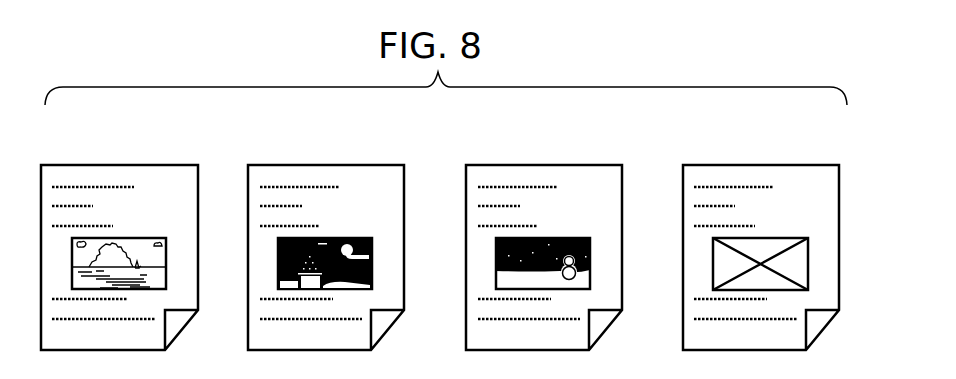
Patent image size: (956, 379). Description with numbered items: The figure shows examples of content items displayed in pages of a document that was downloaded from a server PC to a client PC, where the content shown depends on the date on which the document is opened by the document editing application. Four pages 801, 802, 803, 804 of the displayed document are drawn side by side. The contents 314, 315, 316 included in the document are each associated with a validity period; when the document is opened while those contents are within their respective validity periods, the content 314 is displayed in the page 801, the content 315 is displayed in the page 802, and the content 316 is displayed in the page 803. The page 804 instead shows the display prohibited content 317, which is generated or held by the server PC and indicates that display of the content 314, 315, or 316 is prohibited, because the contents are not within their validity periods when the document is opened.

The page 801 is at (115, 162).
The page 802 is at (322, 162).
The page 803 is at (540, 162).
The page 804 is at (753, 162).
The content 314 is at (127, 236).
The content 315 is at (334, 236).
The content 316 is at (552, 236).
The display prohibited content 317 is at (765, 236).